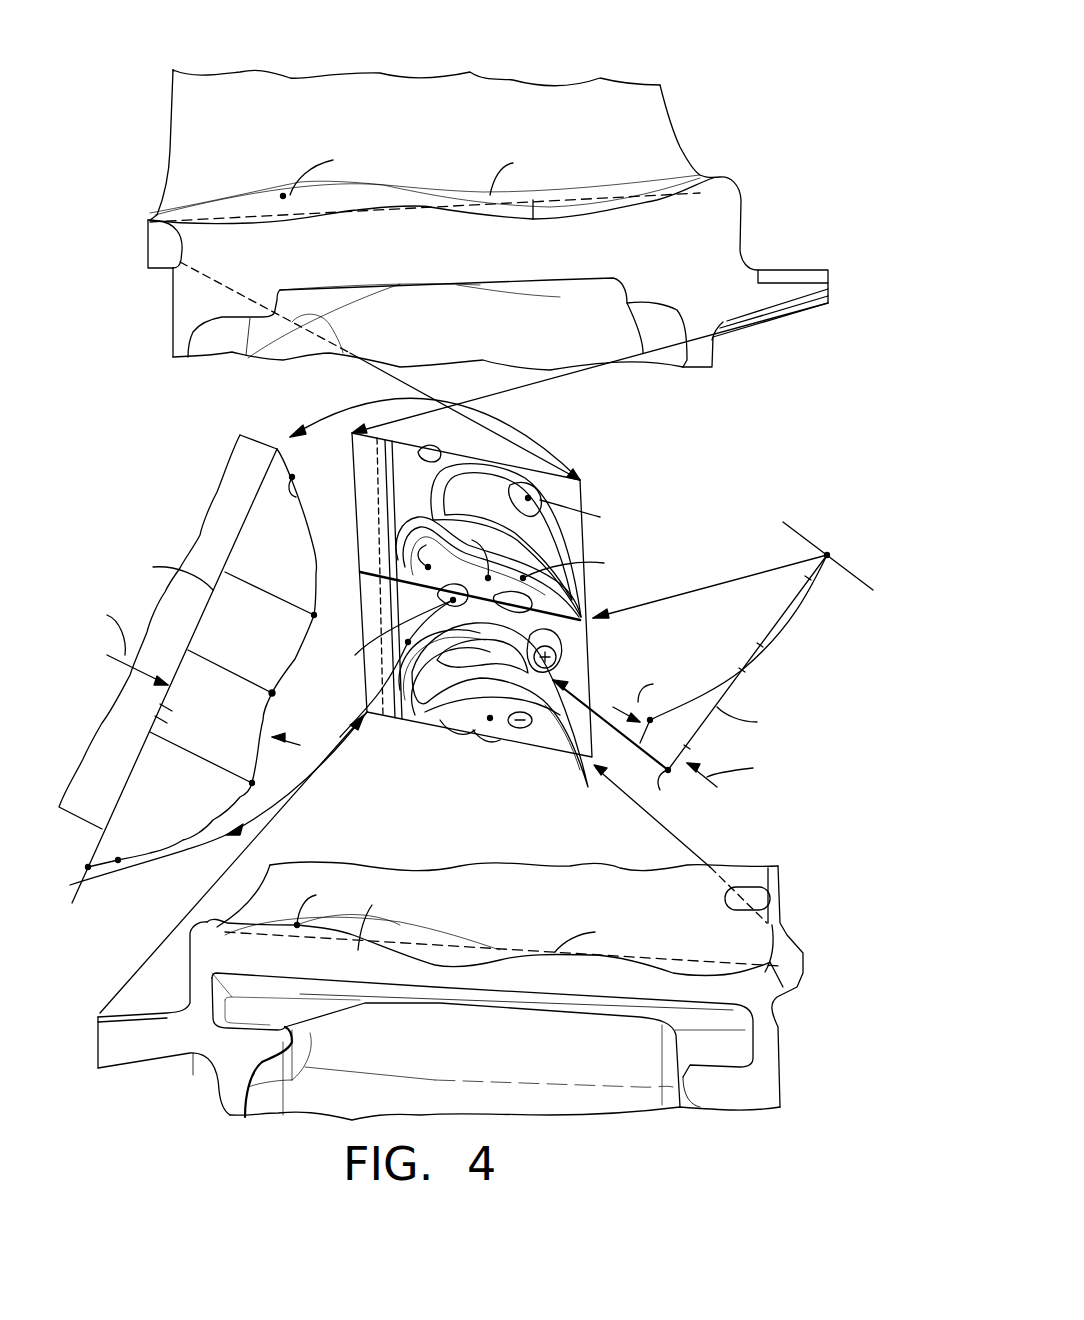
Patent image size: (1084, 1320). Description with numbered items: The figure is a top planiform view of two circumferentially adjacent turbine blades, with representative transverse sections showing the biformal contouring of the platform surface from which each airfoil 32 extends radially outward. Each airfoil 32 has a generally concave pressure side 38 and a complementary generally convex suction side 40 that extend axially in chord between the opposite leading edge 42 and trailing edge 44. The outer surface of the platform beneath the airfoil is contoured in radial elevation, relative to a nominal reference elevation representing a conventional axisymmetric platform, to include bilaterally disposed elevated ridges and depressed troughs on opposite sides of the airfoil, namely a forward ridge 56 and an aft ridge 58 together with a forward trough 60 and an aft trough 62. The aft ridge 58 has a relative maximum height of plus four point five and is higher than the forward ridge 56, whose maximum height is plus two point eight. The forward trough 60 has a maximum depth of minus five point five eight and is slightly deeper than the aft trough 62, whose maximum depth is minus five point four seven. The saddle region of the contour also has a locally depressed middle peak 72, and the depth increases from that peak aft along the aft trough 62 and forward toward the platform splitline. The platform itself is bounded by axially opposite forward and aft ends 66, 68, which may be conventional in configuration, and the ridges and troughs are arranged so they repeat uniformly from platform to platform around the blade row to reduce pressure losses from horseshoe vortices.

The airfoil 32 is at (525, 78).
The pressure side 38 is at (803, 542).
The suction side 40 is at (489, 275).
The leading edge 42 is at (665, 112).
The trailing edge 44 is at (170, 115).
The forward ridge 56 is at (430, 707).
The aft ridge 58 is at (260, 195).
The forward trough 60 is at (535, 215).
The aft trough 62 is at (308, 527).
The forward end 66 is at (742, 222).
The aft end 68 is at (148, 230).
The middle peak 72 is at (275, 693).